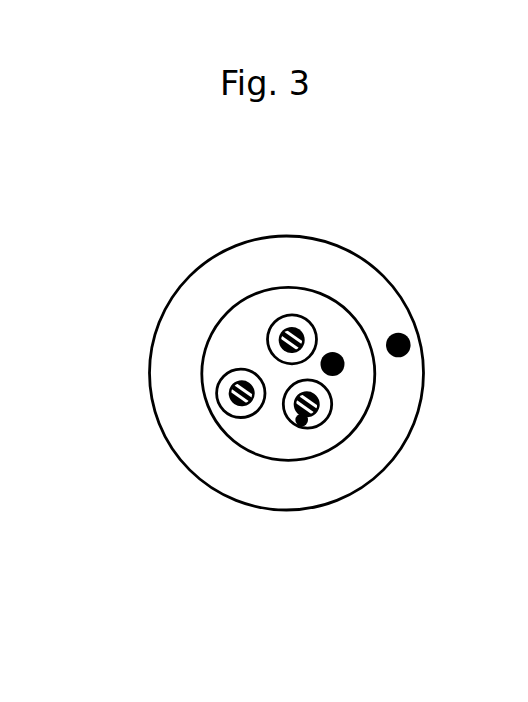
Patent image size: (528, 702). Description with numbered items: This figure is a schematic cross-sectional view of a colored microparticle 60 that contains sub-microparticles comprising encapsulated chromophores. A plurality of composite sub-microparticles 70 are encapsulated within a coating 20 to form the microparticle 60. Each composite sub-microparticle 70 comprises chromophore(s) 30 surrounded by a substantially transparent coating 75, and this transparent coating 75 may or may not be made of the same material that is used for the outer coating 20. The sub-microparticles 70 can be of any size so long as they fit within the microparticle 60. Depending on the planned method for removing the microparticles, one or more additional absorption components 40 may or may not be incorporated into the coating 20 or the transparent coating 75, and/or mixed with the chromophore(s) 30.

The coating 20 is at (298, 483).
The chromophore 30 is at (232, 402).
The absorption component 40 is at (342, 372).
The microparticle 60 is at (174, 296).
The composite sub-microparticle 70 is at (268, 338).
The substantially transparent coating 75 is at (307, 325).